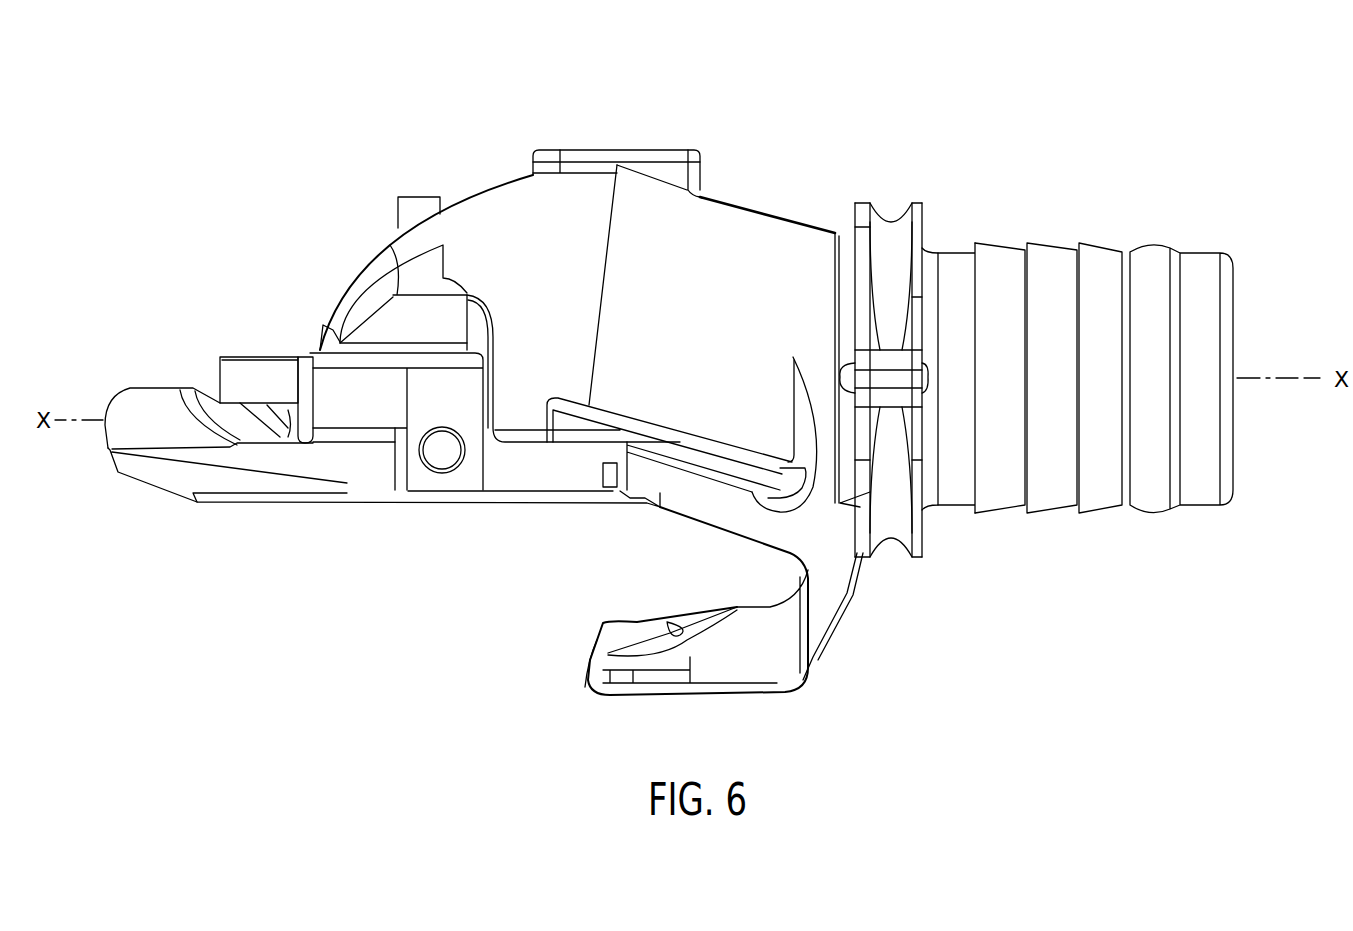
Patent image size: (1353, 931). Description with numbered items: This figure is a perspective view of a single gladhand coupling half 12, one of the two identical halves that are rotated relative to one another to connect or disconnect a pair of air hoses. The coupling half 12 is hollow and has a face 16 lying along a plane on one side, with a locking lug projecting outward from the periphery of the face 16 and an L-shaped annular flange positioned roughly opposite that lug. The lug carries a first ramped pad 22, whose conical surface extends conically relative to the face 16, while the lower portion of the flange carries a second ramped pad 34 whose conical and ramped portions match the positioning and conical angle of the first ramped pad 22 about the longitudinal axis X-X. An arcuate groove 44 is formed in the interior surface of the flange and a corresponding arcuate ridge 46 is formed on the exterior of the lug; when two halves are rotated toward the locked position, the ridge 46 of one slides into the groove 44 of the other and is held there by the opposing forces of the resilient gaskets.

The coupling half 12 is at (767, 122).
The face 16 is at (277, 502).
The first ramped pad 22 is at (110, 465).
The second ramped pad 34 is at (710, 530).
The arcuate groove 44 is at (663, 607).
The arcuate ridge 46 is at (137, 387).